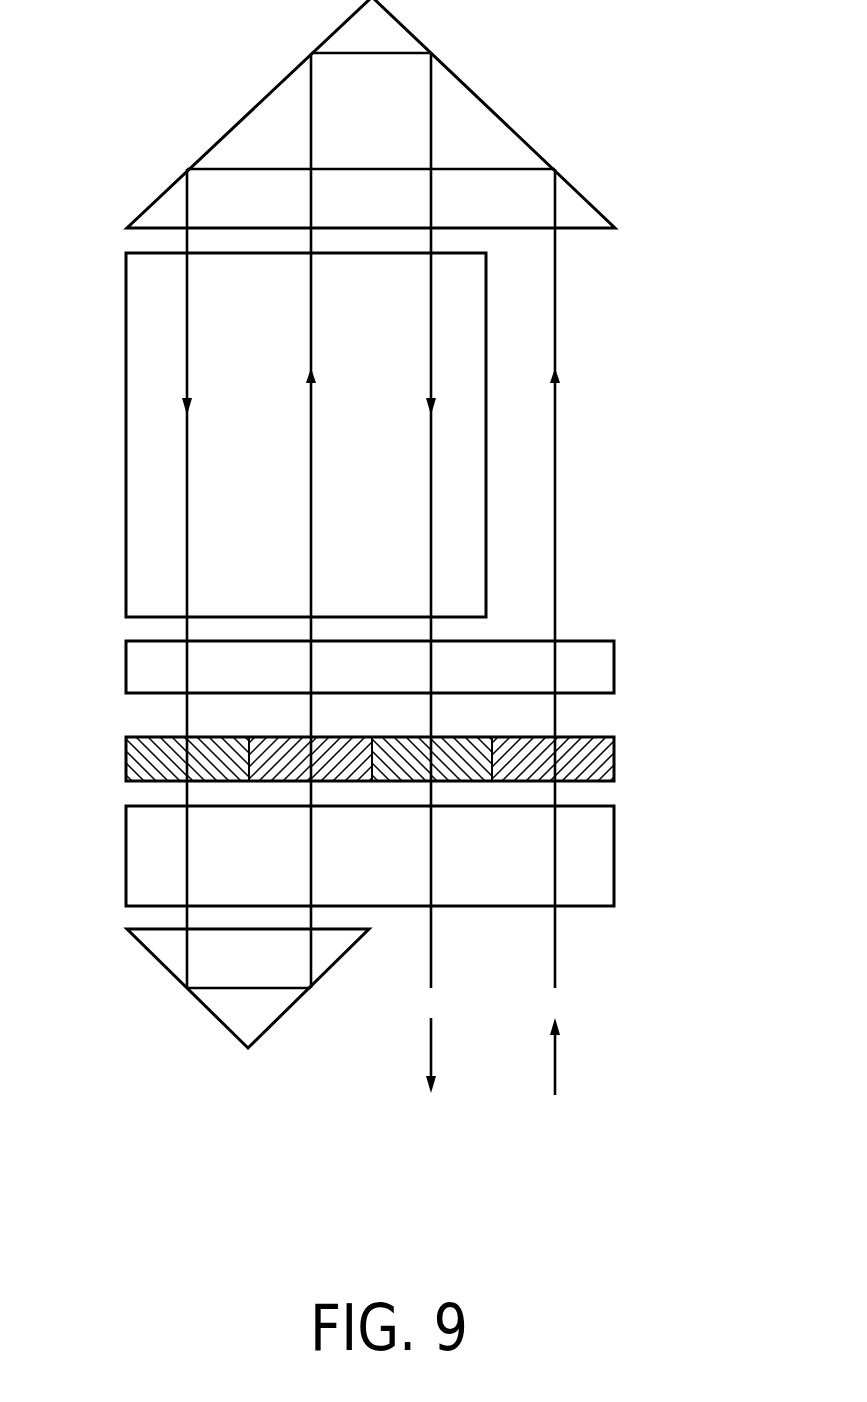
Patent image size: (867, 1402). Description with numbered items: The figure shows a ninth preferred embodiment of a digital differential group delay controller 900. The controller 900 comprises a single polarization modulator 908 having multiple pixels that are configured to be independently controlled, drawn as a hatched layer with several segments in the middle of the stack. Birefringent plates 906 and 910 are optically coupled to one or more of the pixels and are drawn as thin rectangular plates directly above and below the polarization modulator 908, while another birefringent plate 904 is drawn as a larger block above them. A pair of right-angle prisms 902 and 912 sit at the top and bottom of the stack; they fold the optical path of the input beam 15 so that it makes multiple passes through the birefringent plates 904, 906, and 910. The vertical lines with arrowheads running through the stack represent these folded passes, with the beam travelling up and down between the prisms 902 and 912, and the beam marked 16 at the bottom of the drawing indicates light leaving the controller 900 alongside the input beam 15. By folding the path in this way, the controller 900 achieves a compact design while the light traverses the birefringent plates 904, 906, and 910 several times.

The digital DGD controller 900 is at (387, 624).
The right-angle prism 902 is at (488, 102).
The birefringent plate 904 is at (125, 420).
The birefringent plate 906 is at (614, 667).
The polarization modulator 908 is at (614, 762).
The birefringent plate 910 is at (614, 853).
The right-angle prism 912 is at (217, 1020).
The input beam 15 is at (556, 1060).
The incident light 16 is at (432, 1048).